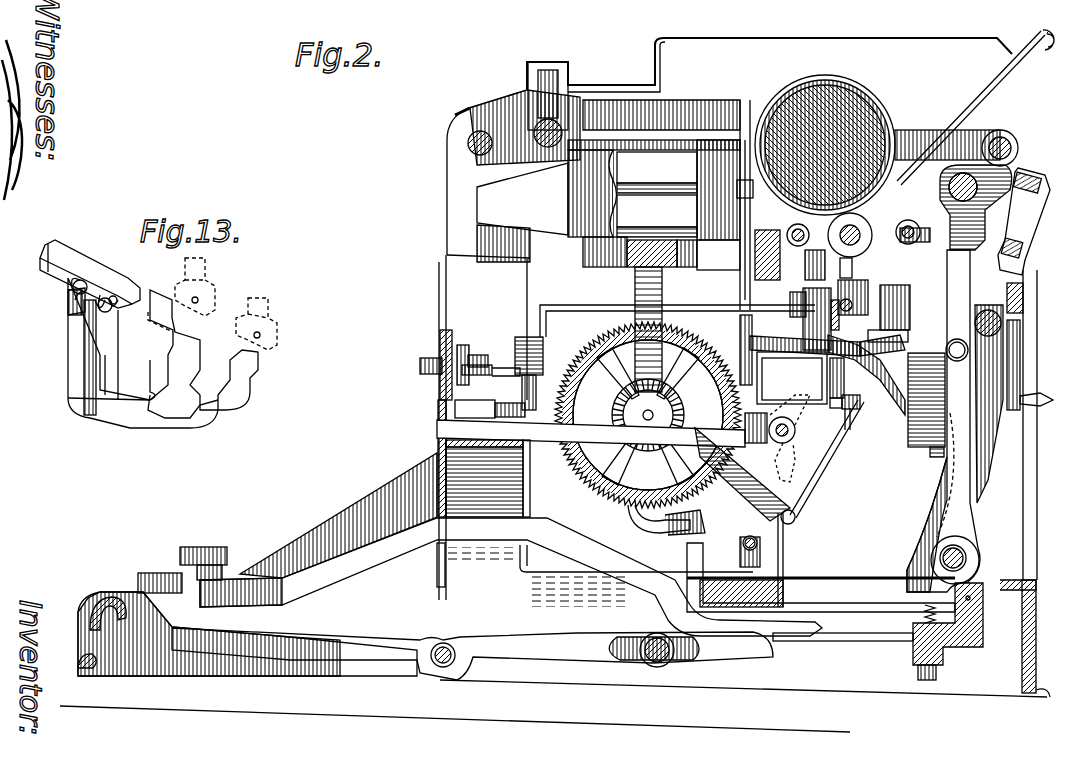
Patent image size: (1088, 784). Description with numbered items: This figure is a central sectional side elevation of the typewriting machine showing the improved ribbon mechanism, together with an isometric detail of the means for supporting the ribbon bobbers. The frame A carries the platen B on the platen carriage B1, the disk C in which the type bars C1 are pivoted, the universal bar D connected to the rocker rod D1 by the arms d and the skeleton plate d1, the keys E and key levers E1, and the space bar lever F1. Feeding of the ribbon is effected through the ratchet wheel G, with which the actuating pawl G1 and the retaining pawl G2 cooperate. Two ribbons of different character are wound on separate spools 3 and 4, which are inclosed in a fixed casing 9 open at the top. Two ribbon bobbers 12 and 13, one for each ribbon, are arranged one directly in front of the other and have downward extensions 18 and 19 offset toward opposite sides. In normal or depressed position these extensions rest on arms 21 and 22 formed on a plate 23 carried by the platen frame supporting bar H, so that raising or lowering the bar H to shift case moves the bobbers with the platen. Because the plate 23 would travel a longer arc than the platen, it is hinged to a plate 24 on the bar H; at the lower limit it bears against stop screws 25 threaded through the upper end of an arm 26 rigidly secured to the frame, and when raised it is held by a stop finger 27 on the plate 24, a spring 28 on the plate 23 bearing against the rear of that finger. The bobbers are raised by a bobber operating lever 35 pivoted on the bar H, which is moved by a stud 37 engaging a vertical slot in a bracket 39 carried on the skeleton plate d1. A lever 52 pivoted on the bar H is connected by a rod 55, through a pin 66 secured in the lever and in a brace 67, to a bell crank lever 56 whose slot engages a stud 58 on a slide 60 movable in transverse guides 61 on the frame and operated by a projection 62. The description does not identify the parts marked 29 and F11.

In FIG. 2, the ribbon bobber 12 is at (742, 130).
In FIG. 2, the ribbon bobber 13 is at (752, 140).
In FIG. 2, the platen B is at (855, 95).
In FIG. 2, the platen carriage B1 is at (968, 138).
In FIG. 13, the platen frame supporting rod or bar H is at (110, 248).
In FIG. 2, the platen frame supporting rod or bar H is at (880, 255).
In FIG. 2, the bracket 39 is at (862, 235).
In FIG. 2, the fixed casing 9 is at (565, 205).
In FIG. 2, the spool 4 is at (657, 172).
In FIG. 2, the spool 3 is at (657, 216).
In FIG. 2, the disk C is at (735, 292).
In FIG. 2, the ratchet wheel G is at (603, 343).
In FIG. 2, the type bars C1 is at (593, 430).
In FIG. 2, the retaining pawl G2 is at (640, 510).
In FIG. 2, the actuating pawl G1 is at (668, 535).
In FIG. 2, the transverse guides 61 is at (455, 345).
In FIG. 2, the slide 60 is at (445, 350).
In FIG. 2, the projection 62 is at (425, 370).
In FIG. 2, the stud 58 is at (468, 360).
In FIG. 2, the bell crank lever 56 is at (490, 365).
In FIG. 2, the connecting rod or bar 55 is at (622, 318).
In FIG. 2, the universal bar D is at (745, 322).
In FIG. 2, the lever 52 is at (790, 298).
In FIG. 2, the plate 24 is at (810, 318).
In FIG. 2, the stud 37 is at (855, 300).
In FIG. 2, the pin 66 is at (790, 335).
In FIG. 2, the brace or bracket 67 is at (795, 358).
In FIG. 13, the stop finger 27 is at (82, 318).
In FIG. 2, the stop finger 27 is at (817, 374).
In FIG. 13, the spring 28 is at (86, 350).
In FIG. 2, the spring 28 is at (845, 375).
In FIG. 2, the stop screws 25 is at (860, 403).
In FIG. 2, the link 29 is at (850, 400).
In FIG. 2, the bobber operating lever 35 is at (830, 405).
In FIG. 2, the arm 26 is at (840, 482).
In FIG. 2, the skeleton plate d1 is at (947, 342).
In FIG. 2, the arms d is at (970, 480).
In FIG. 2, the rocker rod D1 is at (965, 557).
In FIG. 2, the frame A is at (338, 514).
In FIG. 2, the space bar lever F1 is at (150, 573).
In FIG. 2, the key levers E1 is at (232, 540).
In FIG. 2, the keys E is at (412, 545).
In FIG. 2, the base lever F11 is at (533, 657).
In FIG. 13, the arm 21 is at (158, 325).
In FIG. 13, the downward extension 18 is at (210, 288).
In FIG. 13, the downward extension 19 is at (268, 310).
In FIG. 13, the plate 23 is at (75, 383).
In FIG. 13, the arm 22 is at (245, 400).